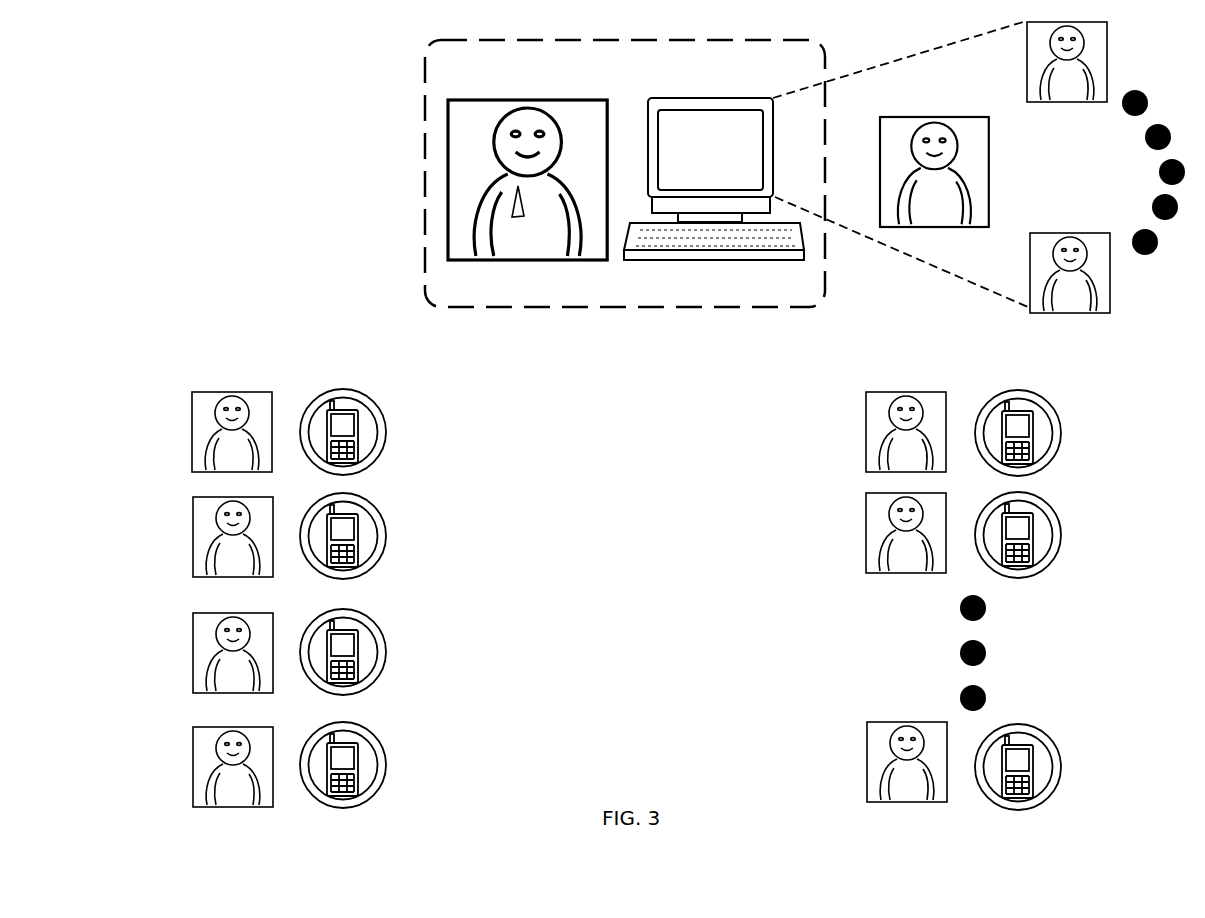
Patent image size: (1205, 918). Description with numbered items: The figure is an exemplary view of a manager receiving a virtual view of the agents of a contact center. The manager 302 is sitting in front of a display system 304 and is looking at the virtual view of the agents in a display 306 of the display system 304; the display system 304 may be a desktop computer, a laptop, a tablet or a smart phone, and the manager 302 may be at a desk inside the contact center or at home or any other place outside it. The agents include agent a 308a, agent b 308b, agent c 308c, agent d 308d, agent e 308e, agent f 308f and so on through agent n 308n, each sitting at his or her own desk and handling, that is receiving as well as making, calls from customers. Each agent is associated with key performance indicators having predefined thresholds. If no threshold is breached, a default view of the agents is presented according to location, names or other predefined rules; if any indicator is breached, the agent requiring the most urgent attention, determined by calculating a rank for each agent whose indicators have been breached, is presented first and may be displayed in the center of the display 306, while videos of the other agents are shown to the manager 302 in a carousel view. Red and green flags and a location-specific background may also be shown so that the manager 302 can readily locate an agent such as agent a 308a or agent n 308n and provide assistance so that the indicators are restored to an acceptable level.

The manager 302 is at (373, 242).
The display system 304 is at (758, 287).
The display 306 is at (736, 166).
The agent a 308a is at (480, 459).
The agent b 308b is at (1169, 327).
The agent c 308c is at (1050, 187).
The agent d 308d is at (1169, 71).
The agent e 308e is at (1125, 447).
The agent f 308f is at (1119, 532).
The agent n 308n is at (1126, 759).